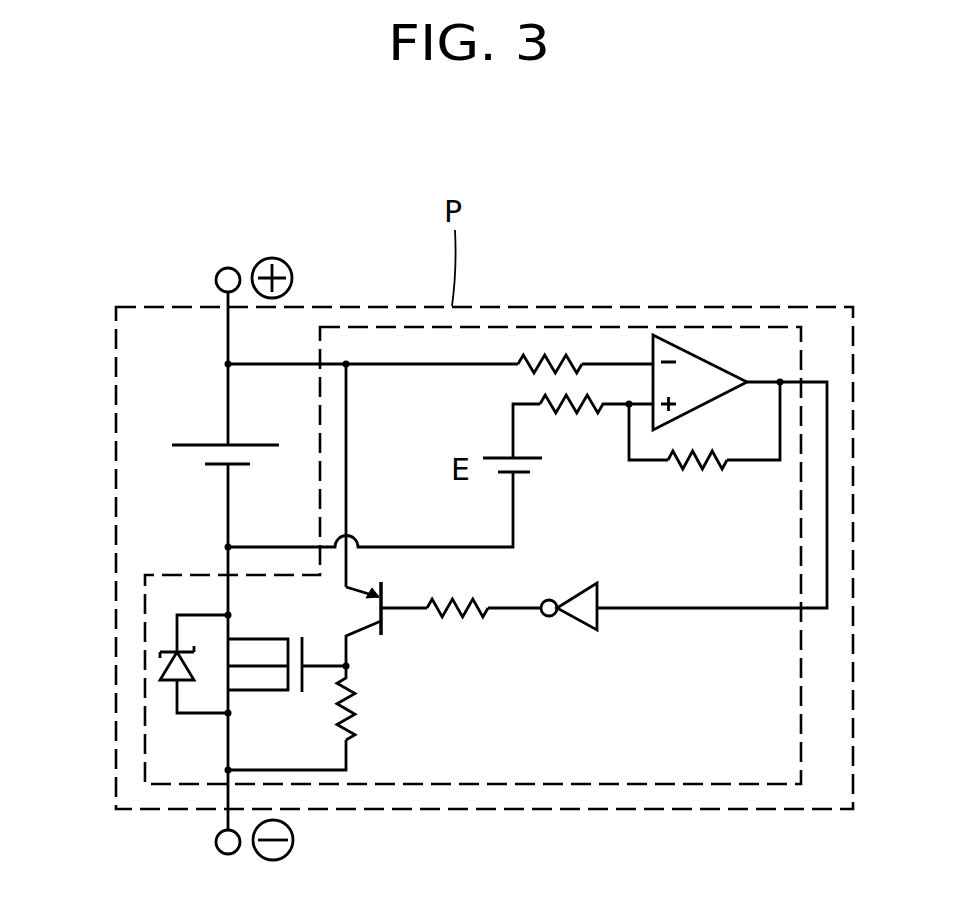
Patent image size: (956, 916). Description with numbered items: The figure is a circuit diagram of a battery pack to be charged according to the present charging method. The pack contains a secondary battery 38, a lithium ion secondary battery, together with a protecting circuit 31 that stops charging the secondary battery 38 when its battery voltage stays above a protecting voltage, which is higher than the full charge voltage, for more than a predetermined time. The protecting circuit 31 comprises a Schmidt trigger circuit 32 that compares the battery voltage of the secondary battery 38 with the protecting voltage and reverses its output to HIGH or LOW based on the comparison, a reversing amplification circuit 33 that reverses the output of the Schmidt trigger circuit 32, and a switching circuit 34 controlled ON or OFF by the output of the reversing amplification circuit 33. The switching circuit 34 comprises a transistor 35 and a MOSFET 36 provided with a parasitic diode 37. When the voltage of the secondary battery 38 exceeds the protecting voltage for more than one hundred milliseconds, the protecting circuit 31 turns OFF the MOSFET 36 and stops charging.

The protecting circuit 31 is at (718, 323).
The Schmidt trigger circuit 32 is at (668, 463).
The reversing amplification circuit 33 is at (578, 618).
The switching circuit 34 is at (372, 665).
The transistor 35 is at (385, 590).
The MOSFET 36 is at (263, 692).
The parasitic diode 37 is at (160, 668).
The secondary battery 38 is at (195, 445).